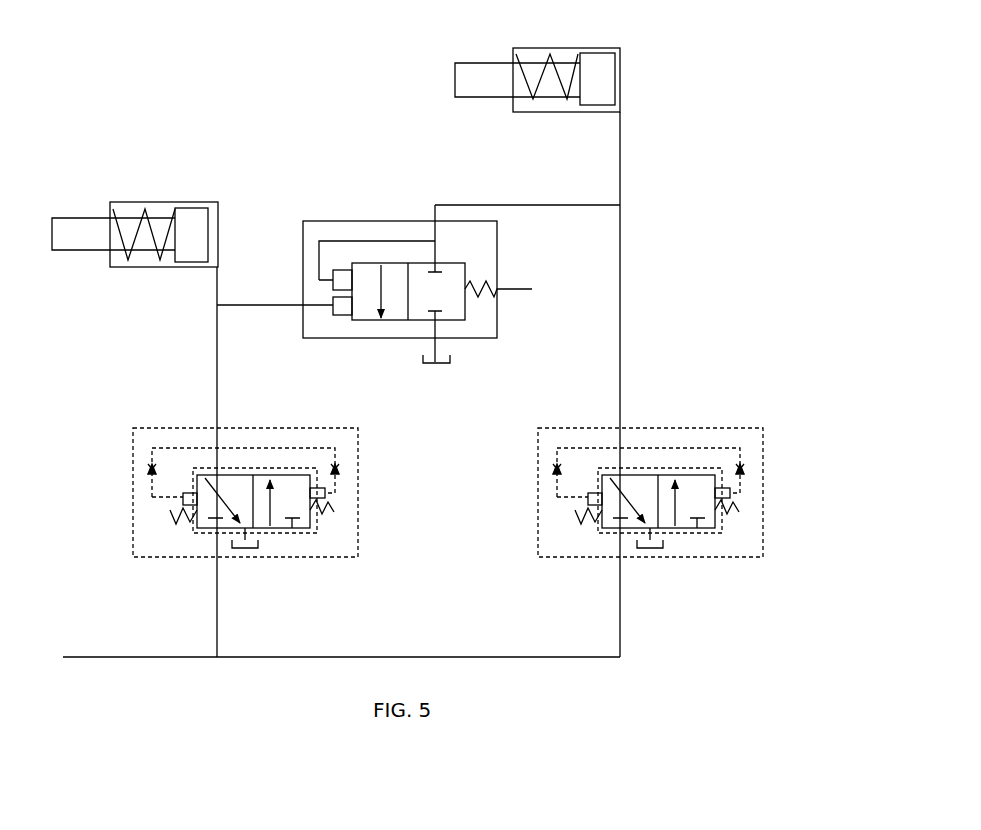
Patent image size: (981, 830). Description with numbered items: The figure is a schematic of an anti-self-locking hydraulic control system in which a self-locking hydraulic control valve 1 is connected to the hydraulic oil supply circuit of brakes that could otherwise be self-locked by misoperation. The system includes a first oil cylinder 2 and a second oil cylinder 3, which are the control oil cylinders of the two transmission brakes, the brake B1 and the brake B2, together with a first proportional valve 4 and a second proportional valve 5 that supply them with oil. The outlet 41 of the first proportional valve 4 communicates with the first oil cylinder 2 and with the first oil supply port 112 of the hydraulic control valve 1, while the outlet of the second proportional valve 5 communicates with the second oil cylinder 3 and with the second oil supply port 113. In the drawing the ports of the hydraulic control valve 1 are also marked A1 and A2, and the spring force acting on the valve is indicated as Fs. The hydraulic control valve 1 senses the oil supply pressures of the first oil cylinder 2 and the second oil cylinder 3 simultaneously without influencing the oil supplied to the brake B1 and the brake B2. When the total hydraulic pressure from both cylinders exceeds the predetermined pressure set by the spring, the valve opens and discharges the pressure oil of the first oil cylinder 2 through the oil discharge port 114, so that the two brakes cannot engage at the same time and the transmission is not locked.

The hydraulic control valve 1 is at (300, 170).
The first oil cylinder 2 is at (537, 93).
The second oil cylinder 3 is at (135, 235).
The first proportional valve 4 is at (666, 469).
The second proportional valve 5 is at (358, 522).
The outlet of the first proportional valve 41 is at (621, 427).
The first oil supply port 112 is at (381, 282).
The second oil supply port 113 is at (303, 306).
The oil discharge port 114 is at (440, 341).
The brake B1 is at (581, 33).
The brake B2 is at (180, 166).
The first working port A1 is at (333, 276).
The second working port A2 is at (333, 315).
The spring force Fs is at (495, 286).